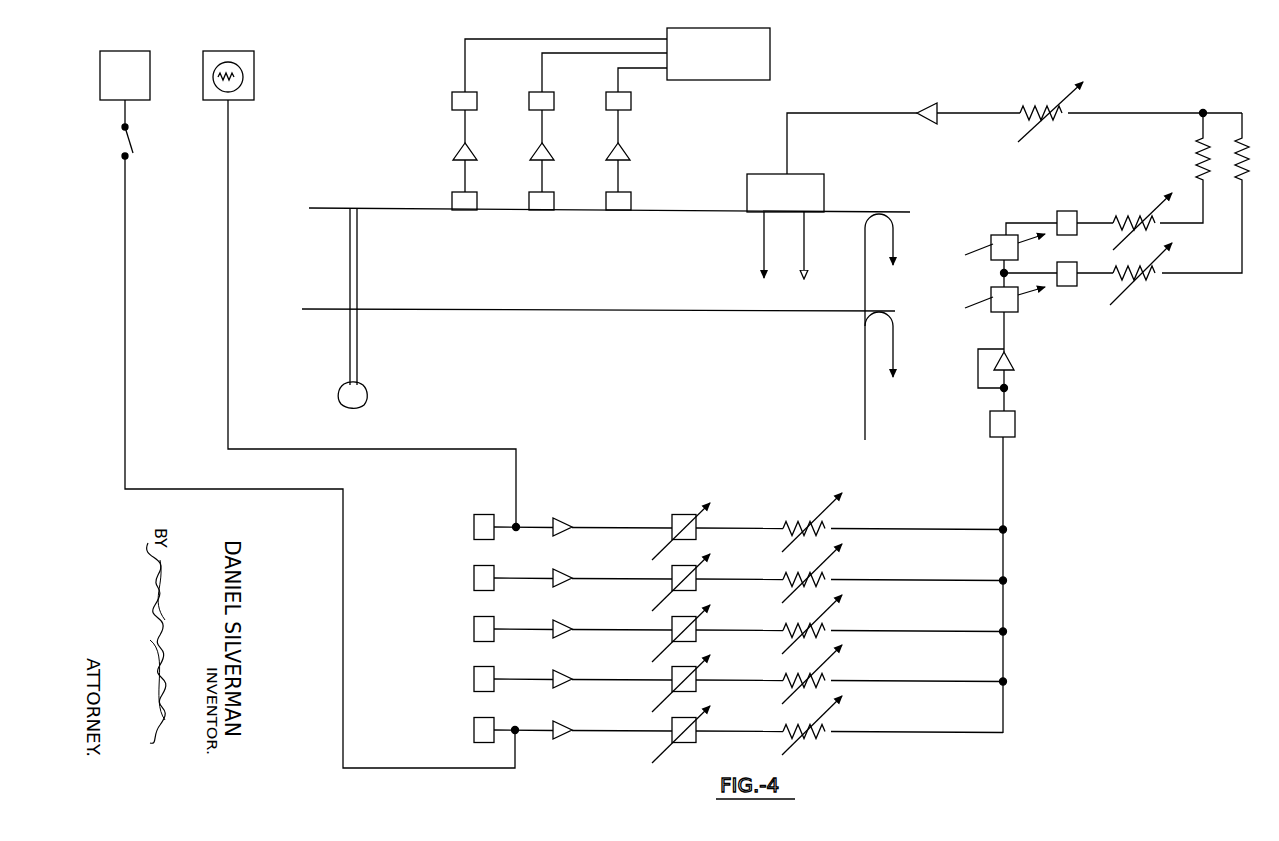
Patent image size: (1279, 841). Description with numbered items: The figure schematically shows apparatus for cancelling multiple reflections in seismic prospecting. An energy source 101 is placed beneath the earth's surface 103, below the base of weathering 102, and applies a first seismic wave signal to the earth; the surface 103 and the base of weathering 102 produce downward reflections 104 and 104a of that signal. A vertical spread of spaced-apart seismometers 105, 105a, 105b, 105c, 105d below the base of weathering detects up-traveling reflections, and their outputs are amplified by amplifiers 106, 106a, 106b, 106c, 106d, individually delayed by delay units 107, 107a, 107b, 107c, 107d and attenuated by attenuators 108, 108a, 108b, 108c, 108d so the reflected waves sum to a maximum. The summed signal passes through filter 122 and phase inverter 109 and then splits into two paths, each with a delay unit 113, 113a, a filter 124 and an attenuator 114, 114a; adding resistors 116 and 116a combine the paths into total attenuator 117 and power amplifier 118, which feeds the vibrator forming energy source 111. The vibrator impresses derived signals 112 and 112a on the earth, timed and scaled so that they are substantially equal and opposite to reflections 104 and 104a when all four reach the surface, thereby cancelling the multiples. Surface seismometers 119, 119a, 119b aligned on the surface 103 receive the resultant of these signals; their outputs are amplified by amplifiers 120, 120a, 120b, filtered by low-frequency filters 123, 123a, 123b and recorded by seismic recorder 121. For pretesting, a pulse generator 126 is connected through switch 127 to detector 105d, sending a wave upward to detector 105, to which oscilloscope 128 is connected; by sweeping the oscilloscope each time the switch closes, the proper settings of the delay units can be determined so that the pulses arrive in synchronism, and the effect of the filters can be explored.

The energy source 101 is at (360, 407).
The base of weathering 102 is at (328, 308).
The earth's surface 103 is at (337, 207).
The downward reflection 104 is at (893, 246).
The downward reflection 104a is at (893, 357).
The seismometer 105 is at (474, 527).
The seismometer 105a is at (474, 578).
The seismometer 105b is at (474, 629).
The seismometer 105c is at (474, 679).
The detector 105d is at (474, 730).
The amplifier 106 is at (557, 513).
The amplifier 106a is at (561, 564).
The amplifier 106b is at (561, 615).
The amplifier 106c is at (560, 665).
The amplifier 106d is at (561, 716).
The delay unit 107 is at (672, 516).
The delay unit 107a is at (672, 586).
The delay unit 107b is at (672, 637).
The delay unit 107c is at (672, 687).
The delay unit 107d is at (672, 738).
The attenuator 108 is at (833, 525).
The attenuator 108a is at (833, 576).
The attenuator 108b is at (833, 627).
The attenuator 108c is at (833, 677).
The attenuator 108d is at (833, 728).
The phase inverter 109 is at (1012, 371).
The energy source 111 is at (785, 193).
The derived signal 112 is at (764, 236).
The derived signal 112a is at (804, 250).
The delay unit 113 is at (992, 242).
The delay unit 113a is at (993, 310).
The attenuator 114 is at (1135, 215).
The attenuator 114a is at (1160, 278).
The adding resistor 116 is at (1197, 163).
The adding resistor 116a is at (1250, 148).
The total attenuator 117 is at (1046, 110).
The power amplifier 118 is at (930, 103).
The surface seismometer 119 is at (452, 201).
The surface seismometer 119a is at (529, 201).
The surface seismometer 119b is at (620, 202).
The amplifier 120 is at (452, 153).
The amplifier 120a is at (532, 157).
The amplifier 120b is at (627, 155).
The seismic recorder 121 is at (718, 54).
The filter 122 is at (1015, 425).
The filter 123 is at (452, 100).
The filter 123a is at (529, 100).
The filter 123b is at (631, 103).
The filter 124 is at (1067, 211).
The pulse generator 126 is at (125, 75).
The switch 127 is at (135, 152).
The oscilloscope 128 is at (245, 53).